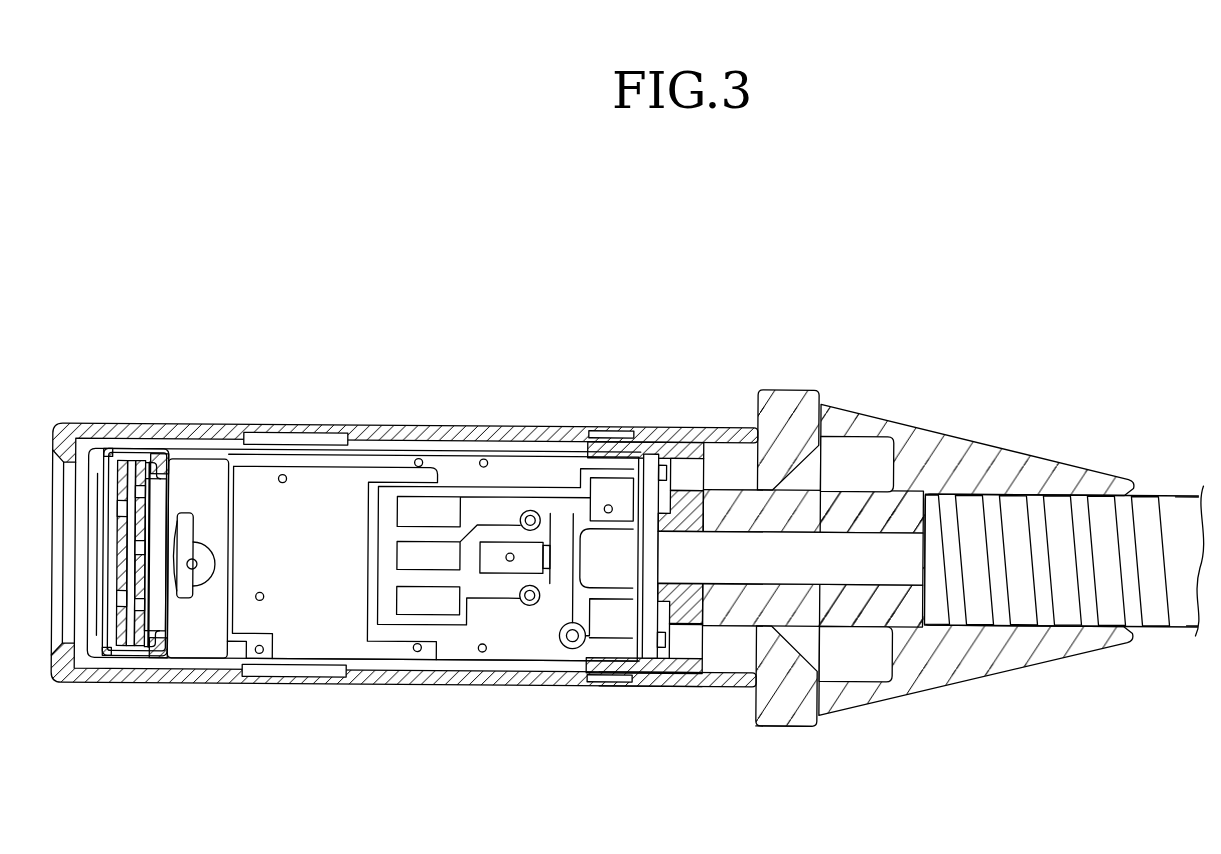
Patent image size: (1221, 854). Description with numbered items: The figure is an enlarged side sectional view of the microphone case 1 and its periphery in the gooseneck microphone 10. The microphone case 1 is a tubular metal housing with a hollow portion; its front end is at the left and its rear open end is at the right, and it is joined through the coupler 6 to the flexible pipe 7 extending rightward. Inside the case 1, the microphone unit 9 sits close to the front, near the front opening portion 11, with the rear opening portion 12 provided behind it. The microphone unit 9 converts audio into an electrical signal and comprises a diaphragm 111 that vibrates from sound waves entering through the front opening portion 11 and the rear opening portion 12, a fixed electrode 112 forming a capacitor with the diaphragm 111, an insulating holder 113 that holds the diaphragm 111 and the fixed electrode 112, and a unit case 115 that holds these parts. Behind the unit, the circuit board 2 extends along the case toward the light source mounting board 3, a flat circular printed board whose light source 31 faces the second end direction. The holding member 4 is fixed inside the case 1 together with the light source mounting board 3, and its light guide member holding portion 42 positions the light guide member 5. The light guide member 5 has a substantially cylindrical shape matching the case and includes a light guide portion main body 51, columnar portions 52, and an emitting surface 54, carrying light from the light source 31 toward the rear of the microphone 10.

The microphone 10 is at (616, 249).
The microphone case 1 is at (217, 352).
The front opening portion 11 is at (70, 487).
The rear opening portion 12 is at (282, 428).
The circuit board 2 is at (383, 459).
The light source mounting board 3 is at (650, 469).
The light source 31 is at (684, 596).
The light guide member holding portion 42 is at (690, 465).
The holding member 4 is at (650, 676).
The columnar portion 52 is at (678, 676).
The light guide portion main body 51 is at (722, 675).
The light guide member 5 is at (796, 380).
The emitting surface 54 is at (776, 722).
The coupler 6 is at (980, 378).
The flexible pipe 7 is at (1184, 495).
The microphone unit 9 is at (285, 751).
The diaphragm 111 is at (93, 590).
The fixed electrode 112 is at (115, 565).
The insulating holder 113 is at (140, 640).
The unit case 115 is at (153, 633).